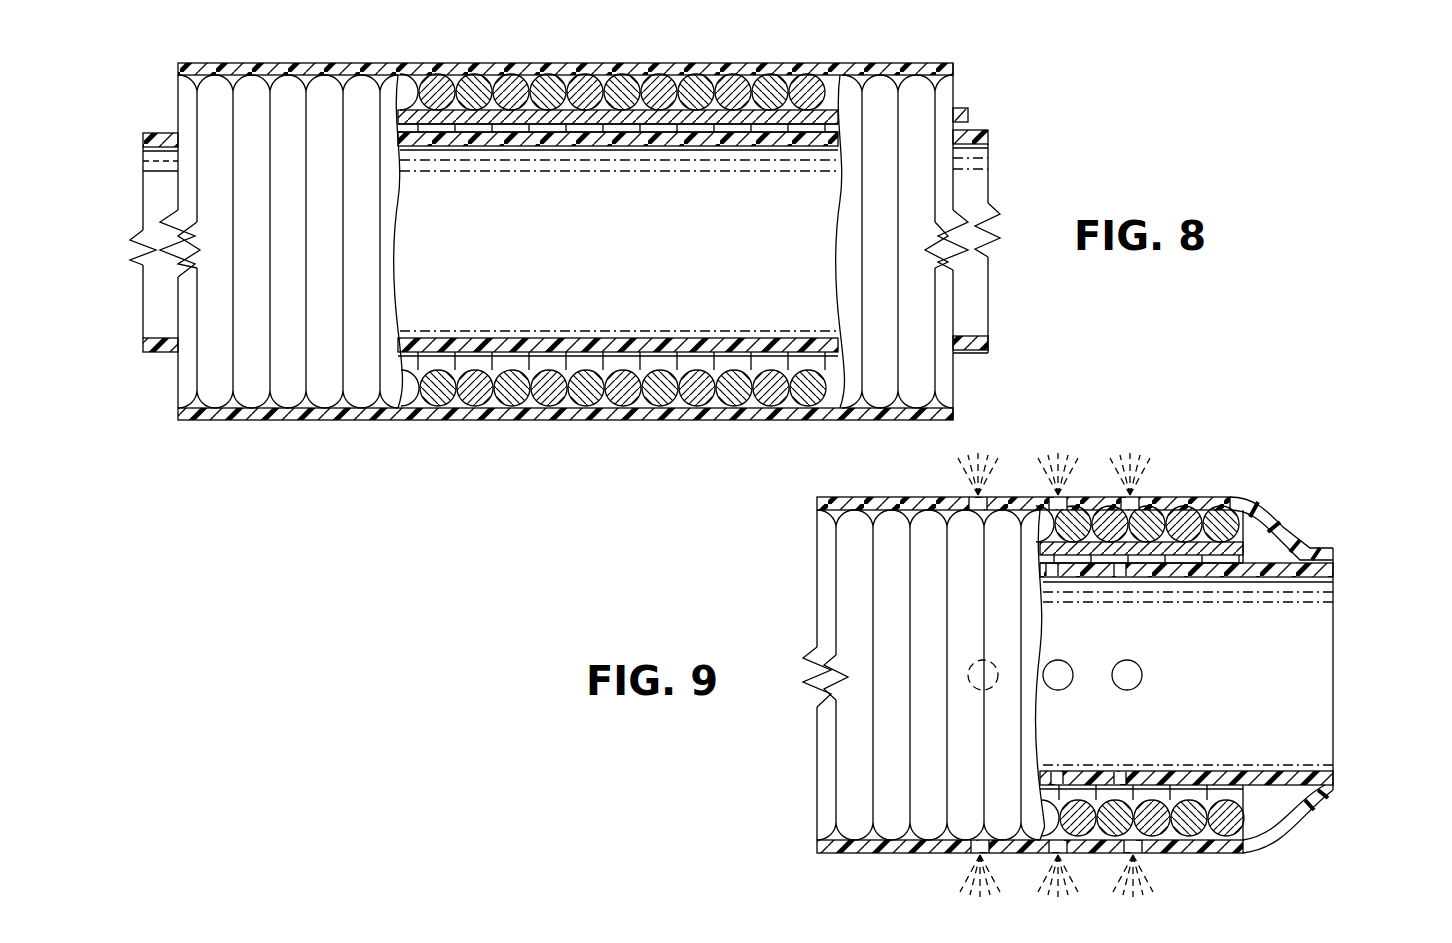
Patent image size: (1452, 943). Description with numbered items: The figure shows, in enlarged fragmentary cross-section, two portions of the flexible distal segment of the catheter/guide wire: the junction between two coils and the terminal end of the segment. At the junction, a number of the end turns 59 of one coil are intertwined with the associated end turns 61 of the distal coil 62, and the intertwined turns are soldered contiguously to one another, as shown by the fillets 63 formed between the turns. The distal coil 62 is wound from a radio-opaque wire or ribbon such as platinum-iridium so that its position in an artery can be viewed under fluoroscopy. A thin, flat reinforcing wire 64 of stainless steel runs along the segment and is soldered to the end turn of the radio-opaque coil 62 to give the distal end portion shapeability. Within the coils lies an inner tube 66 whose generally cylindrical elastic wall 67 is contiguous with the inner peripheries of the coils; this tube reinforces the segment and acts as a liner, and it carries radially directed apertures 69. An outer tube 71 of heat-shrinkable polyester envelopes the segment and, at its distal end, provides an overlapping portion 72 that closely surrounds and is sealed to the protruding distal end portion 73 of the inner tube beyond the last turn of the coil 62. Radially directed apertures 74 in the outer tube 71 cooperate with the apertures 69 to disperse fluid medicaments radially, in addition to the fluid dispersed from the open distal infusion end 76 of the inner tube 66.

In FIG. 8, the end turns 59 is at (550, 394).
In FIG. 8, the end turns 61 is at (506, 394).
In FIG. 9, the distal coil 62 is at (861, 764).
In FIG. 8, the fillets 63 is at (790, 77).
In FIG. 9, the fillets 63 is at (1215, 525).
In FIG. 8, the reinforcing wire 64 is at (968, 115).
In FIG. 9, the reinforcing wire 64 is at (1233, 547).
In FIG. 8, the inner tube 66 is at (990, 137).
In FIG. 8, the elastic wall 67 is at (641, 345).
In FIG. 9, the elastic wall 67 is at (1245, 570).
In FIG. 9, the apertures 69 is at (1130, 578).
In FIG. 8, the outer tube 71 is at (433, 58).
In FIG. 9, the outer tube 71 is at (893, 494).
In FIG. 9, the overlapping portion 72 is at (1300, 527).
In FIG. 9, the protruding distal end portion 73 is at (1316, 772).
In FIG. 9, the apertures 74 is at (1072, 496).
In FIG. 9, the open distal infusion end 76 is at (1339, 668).